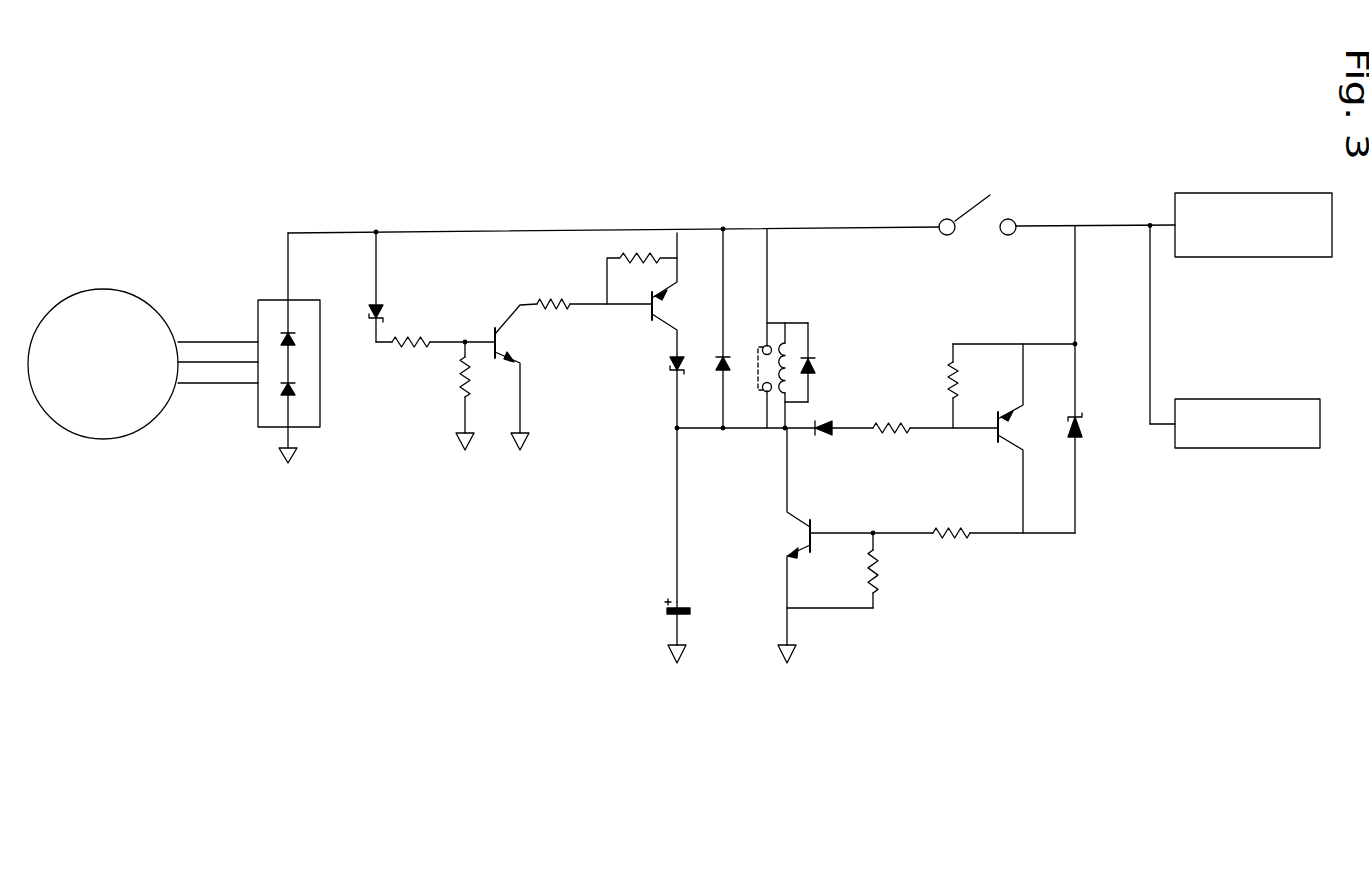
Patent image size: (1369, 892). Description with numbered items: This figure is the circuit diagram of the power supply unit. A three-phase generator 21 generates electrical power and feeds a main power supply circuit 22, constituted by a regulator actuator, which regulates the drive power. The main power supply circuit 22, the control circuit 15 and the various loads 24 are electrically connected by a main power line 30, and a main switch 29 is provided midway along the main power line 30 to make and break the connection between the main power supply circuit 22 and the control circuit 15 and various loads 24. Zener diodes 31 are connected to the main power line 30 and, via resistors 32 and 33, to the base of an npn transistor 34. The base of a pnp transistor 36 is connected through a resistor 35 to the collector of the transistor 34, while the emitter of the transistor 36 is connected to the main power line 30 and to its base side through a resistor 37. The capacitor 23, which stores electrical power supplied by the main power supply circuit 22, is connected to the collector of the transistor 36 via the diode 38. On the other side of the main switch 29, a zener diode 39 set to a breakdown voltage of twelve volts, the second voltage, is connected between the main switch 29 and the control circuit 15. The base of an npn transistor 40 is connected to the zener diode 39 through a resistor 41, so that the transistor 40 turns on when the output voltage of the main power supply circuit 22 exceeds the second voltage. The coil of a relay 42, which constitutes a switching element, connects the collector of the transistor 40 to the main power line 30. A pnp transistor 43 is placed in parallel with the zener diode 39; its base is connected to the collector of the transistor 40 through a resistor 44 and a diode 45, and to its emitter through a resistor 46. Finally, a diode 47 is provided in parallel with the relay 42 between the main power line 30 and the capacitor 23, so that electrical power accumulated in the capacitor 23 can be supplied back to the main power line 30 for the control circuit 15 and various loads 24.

The control circuit 15 is at (1218, 258).
The generator 21 is at (97, 440).
The main power supply circuit 22 is at (258, 427).
The capacitor 23 is at (687, 608).
The various loads 24 is at (1210, 448).
The main switch 29 is at (963, 215).
The main power line 30 is at (578, 231).
The zener diodes 31 is at (383, 313).
The resistor 32 is at (407, 347).
The resistor 33 is at (457, 380).
The npn transistor 34 is at (510, 323).
The resistor 35 is at (553, 313).
The pnp transistor 36 is at (660, 320).
The resistor 37 is at (615, 278).
The diode 38 is at (672, 363).
The zener diode 39 is at (1090, 425).
The npn transistor 40 is at (800, 522).
The resistor 41 is at (947, 537).
The relay 42 is at (790, 337).
The pnp transistor 43 is at (1013, 442).
The resistor 44 is at (877, 433).
The diode 45 is at (832, 420).
The resistor 46 is at (945, 352).
The diode 47 is at (717, 363).